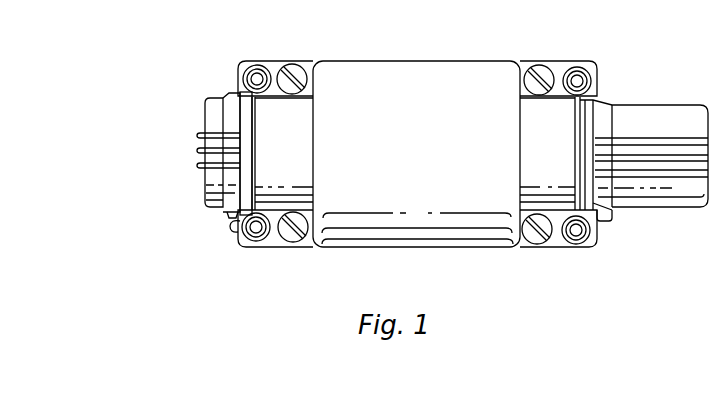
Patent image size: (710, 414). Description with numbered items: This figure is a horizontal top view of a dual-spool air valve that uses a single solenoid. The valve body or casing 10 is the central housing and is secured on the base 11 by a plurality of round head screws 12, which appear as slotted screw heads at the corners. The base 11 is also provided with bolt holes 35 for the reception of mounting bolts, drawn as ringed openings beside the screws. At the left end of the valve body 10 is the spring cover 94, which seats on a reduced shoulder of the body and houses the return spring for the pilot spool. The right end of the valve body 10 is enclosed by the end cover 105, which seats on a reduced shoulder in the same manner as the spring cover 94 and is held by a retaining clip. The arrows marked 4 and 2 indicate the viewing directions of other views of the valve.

The valve body 10 is at (447, 62).
The base 11 is at (590, 246).
The round head screws 12 is at (295, 66).
The bolt holes 35 is at (253, 237).
The spring cover 94 is at (206, 185).
The end cover 105 is at (650, 107).
The section line indicator FIG. 4 is at (180, 150).
The view direction indicator FIG. 2 is at (422, 256).